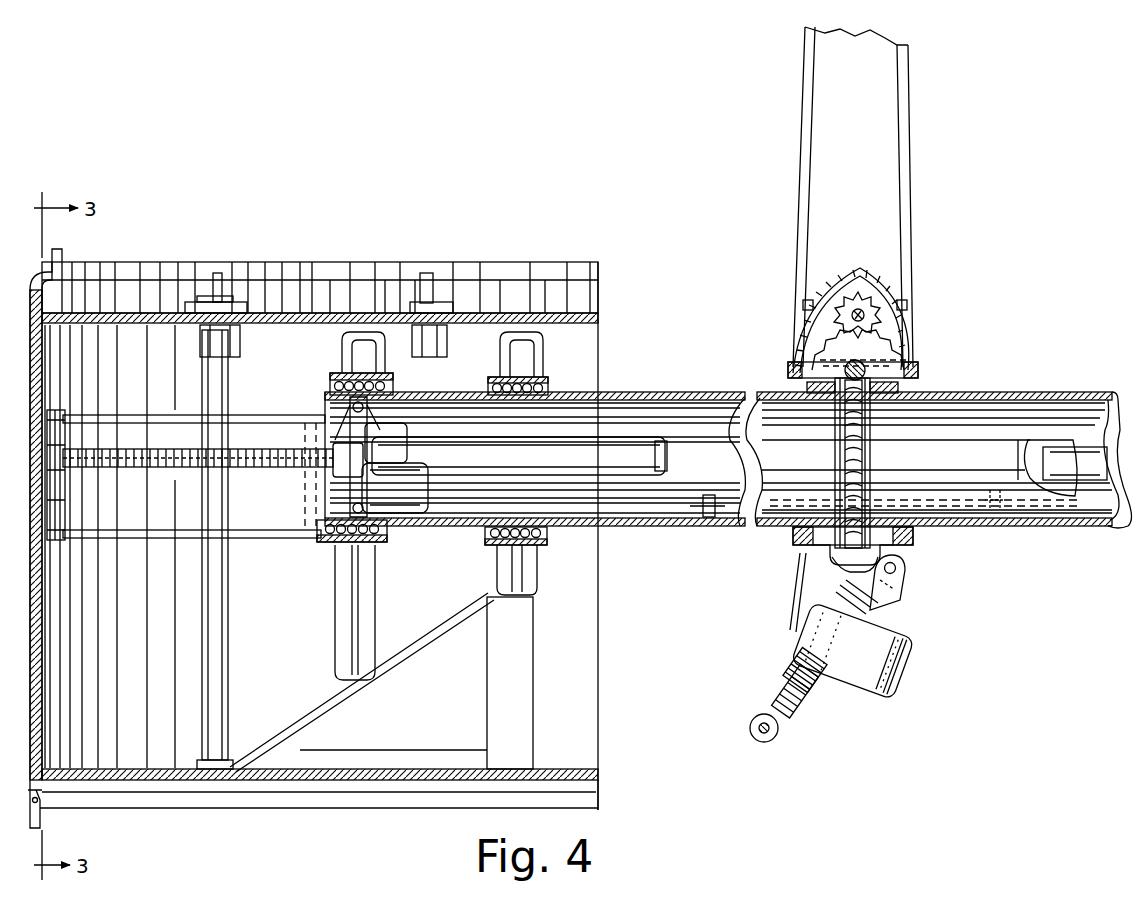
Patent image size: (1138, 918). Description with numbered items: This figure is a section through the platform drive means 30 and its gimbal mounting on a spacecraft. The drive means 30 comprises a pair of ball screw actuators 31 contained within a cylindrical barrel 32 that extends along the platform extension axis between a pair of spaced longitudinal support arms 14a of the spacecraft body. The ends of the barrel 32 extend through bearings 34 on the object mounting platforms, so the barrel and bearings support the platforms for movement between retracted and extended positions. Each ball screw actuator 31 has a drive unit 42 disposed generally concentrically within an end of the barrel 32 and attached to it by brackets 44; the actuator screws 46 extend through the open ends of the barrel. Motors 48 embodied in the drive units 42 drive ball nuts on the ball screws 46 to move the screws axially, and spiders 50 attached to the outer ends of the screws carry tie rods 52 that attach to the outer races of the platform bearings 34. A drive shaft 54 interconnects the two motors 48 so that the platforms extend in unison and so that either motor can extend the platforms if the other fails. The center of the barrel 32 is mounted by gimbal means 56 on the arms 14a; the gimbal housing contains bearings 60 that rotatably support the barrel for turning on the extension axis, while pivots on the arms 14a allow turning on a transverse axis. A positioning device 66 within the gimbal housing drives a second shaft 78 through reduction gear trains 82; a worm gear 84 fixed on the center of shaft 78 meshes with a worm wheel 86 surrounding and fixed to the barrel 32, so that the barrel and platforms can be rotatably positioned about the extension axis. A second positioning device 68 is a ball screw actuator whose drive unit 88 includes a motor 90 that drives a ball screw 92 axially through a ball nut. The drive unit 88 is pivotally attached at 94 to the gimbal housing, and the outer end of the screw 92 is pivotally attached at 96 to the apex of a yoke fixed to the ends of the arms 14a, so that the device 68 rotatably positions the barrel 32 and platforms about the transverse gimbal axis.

The longitudinal support arms 14a is at (905, 137).
The platform drive means 30 is at (922, 564).
The ball screw actuators 31 is at (575, 445).
The cylindrical barrel 32 is at (1020, 485).
The bearings 34 is at (378, 545).
The drive units 42 is at (437, 440).
The brackets 44 is at (372, 420).
The actuator screws 46 is at (178, 468).
The motors 48 is at (340, 435).
The spiders 50 is at (62, 508).
The tie rods 52 is at (242, 415).
The drive shaft 54 is at (708, 495).
The gimbal means 56 is at (1002, 396).
The bearings 60 is at (793, 538).
The positioning device 66 is at (880, 272).
The positioning device 68 is at (908, 682).
The second shaft 78 is at (900, 362).
The reduction gear trains 82 is at (885, 330).
The worm gear 84 is at (828, 385).
The worm wheel 86 is at (862, 460).
The actuator drive unit 88 is at (789, 662).
The motor 90 is at (905, 642).
The ball screw 92 is at (756, 716).
The pivotal attachment 94 is at (898, 570).
The pivotal attachment 96 is at (756, 740).